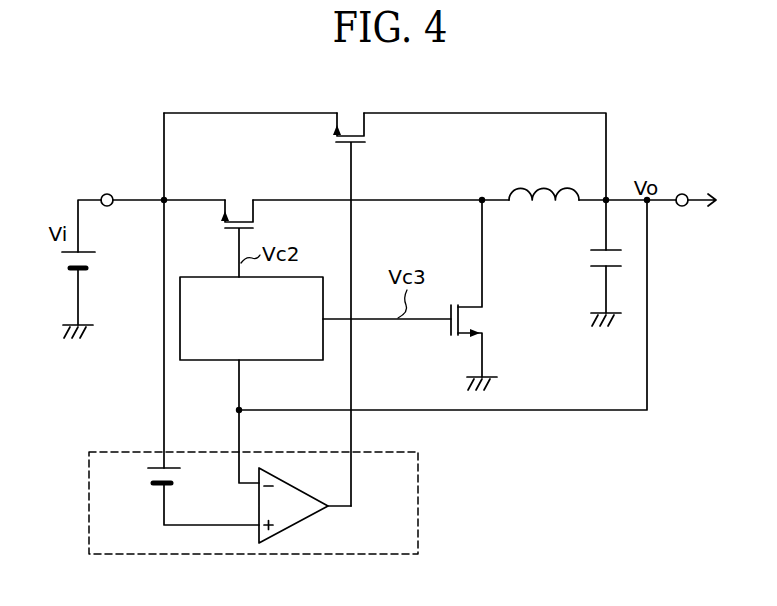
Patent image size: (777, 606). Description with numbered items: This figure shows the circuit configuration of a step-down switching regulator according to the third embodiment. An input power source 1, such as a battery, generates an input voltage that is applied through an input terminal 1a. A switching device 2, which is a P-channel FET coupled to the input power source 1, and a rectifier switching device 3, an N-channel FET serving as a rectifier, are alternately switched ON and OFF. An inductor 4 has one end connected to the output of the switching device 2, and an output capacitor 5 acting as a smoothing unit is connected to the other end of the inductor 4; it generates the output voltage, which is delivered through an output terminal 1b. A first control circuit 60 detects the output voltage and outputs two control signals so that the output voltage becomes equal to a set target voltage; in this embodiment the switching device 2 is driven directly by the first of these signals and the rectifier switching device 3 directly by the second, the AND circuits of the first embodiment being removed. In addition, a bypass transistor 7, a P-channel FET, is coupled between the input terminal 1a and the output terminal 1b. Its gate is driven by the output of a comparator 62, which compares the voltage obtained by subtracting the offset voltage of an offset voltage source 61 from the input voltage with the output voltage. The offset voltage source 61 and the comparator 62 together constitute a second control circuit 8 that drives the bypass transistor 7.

The input power source 1 is at (73, 270).
The input terminal 1a is at (107, 194).
The output terminal 1b is at (683, 207).
The switching device 2 is at (247, 211).
The rectifier switching device 3 is at (470, 308).
The inductor 4 is at (546, 185).
The output capacitor 5 is at (598, 268).
The bypass transistor 7 is at (351, 125).
The second control circuit 8 is at (279, 503).
The first control circuit 60 is at (208, 362).
The offset voltage source 61 is at (170, 485).
The comparator 62 is at (300, 521).